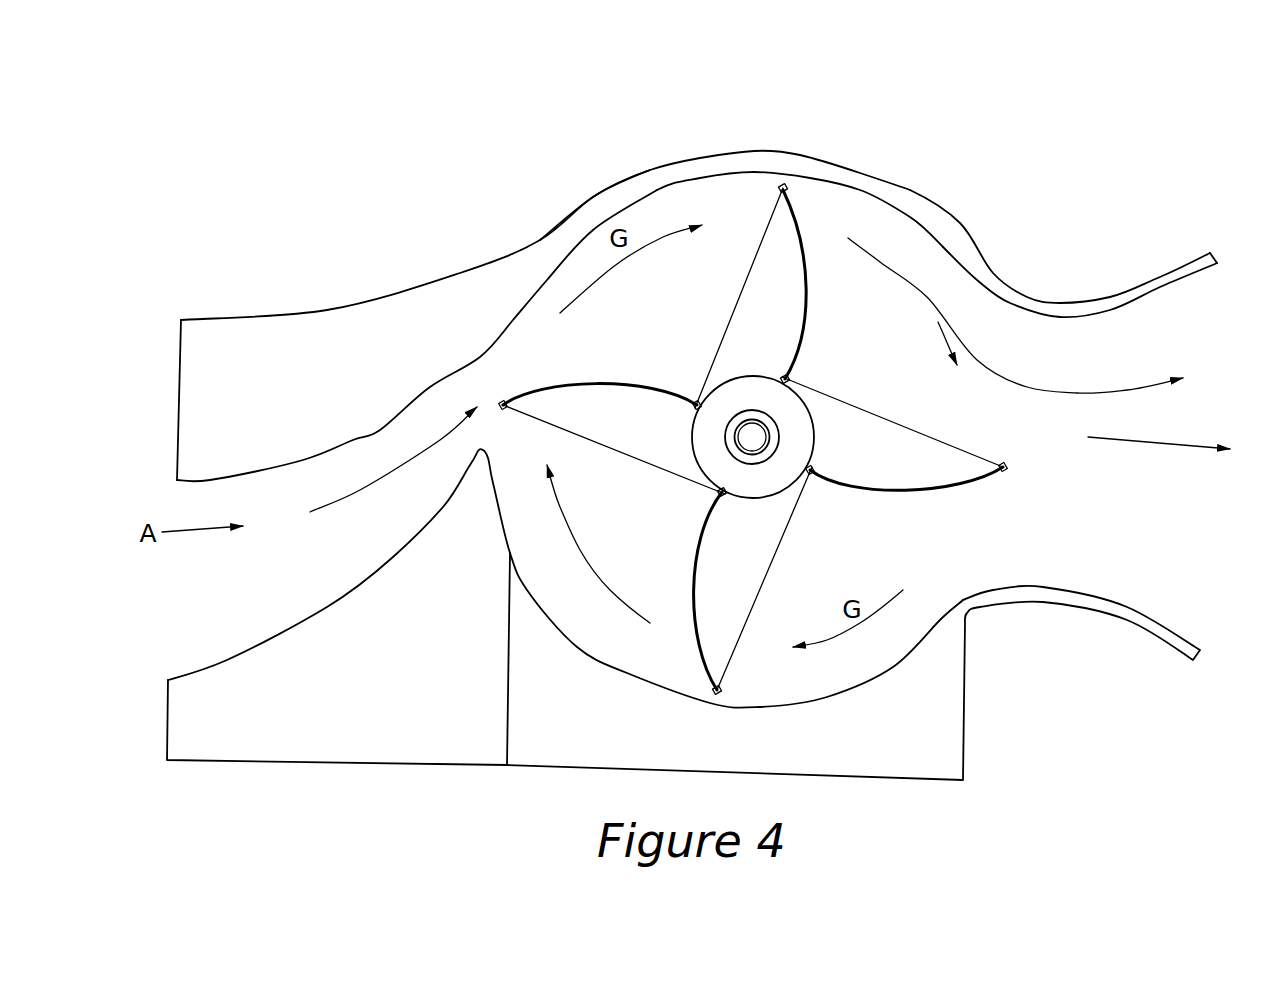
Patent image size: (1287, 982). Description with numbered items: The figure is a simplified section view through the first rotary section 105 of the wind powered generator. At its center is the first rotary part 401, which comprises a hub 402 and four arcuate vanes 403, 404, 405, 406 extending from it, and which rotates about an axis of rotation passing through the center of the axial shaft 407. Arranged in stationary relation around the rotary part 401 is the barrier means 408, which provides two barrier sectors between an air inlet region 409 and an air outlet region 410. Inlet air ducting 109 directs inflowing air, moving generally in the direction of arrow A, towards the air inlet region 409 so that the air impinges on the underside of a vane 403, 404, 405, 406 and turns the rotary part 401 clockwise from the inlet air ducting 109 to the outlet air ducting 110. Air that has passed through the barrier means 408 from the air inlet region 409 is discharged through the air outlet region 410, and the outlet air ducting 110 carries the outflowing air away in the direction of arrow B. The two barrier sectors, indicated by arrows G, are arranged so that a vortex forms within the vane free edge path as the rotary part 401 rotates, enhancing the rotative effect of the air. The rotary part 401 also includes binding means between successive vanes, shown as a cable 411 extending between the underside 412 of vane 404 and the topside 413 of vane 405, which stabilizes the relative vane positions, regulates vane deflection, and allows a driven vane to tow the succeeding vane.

The first rotary section 105 is at (822, 133).
The inlet air ducting 109 is at (213, 318).
The outlet air ducting 110 is at (1143, 279).
The first rotary part 401 is at (735, 408).
The hub 402 is at (742, 440).
The arcuate vane 403 is at (942, 495).
The arcuate vane 404 is at (797, 212).
The arcuate vane 405 is at (536, 394).
The arcuate vane 406 is at (695, 645).
The axial shaft 407 is at (737, 440).
The barrier means 408 is at (591, 195).
The air inlet region 409 is at (476, 389).
The air outlet region 410 is at (983, 422).
The cable 411 is at (757, 235).
The underside of vane 412 is at (808, 251).
The topside of vane 413 is at (607, 381).